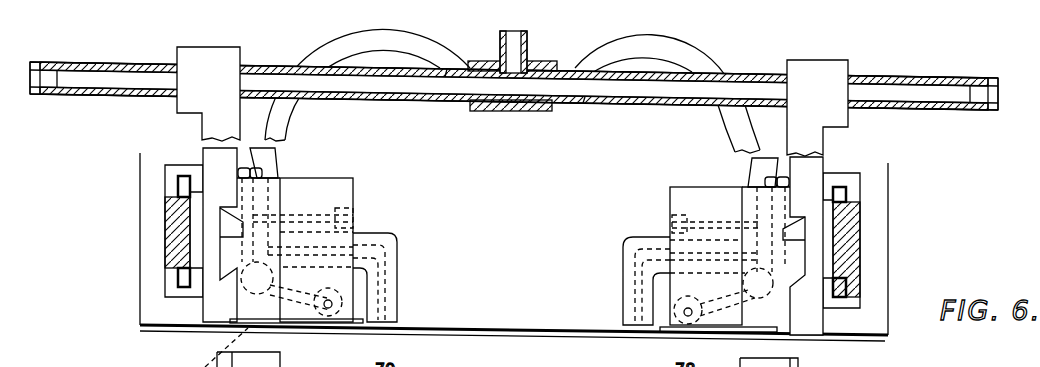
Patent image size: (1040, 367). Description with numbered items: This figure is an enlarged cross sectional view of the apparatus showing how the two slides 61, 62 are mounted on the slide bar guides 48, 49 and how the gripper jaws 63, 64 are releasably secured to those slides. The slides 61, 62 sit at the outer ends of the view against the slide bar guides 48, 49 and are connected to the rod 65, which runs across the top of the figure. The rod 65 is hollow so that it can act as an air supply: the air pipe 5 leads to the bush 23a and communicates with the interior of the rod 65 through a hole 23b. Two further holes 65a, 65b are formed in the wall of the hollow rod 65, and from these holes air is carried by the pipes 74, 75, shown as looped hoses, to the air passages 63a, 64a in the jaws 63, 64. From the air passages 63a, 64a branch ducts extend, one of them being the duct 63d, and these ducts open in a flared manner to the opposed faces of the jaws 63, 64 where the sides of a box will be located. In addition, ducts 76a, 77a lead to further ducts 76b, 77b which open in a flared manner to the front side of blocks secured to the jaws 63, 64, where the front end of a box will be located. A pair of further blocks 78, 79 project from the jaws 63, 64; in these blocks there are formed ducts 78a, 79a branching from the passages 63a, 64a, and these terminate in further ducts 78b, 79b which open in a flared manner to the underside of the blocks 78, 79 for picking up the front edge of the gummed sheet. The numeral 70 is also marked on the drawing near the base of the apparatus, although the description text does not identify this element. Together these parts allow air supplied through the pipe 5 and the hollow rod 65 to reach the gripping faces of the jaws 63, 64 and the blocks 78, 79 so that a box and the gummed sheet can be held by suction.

The air pipe 5 is at (528, 48).
The bush 23a is at (558, 80).
The hole 23b is at (503, 63).
The slide bar guide 48 is at (853, 248).
The slide bar guide 49 is at (165, 234).
The slide 61 is at (823, 174).
The slide 62 is at (203, 161).
The gripper jaw 63 is at (740, 187).
The air passage 63a is at (793, 307).
The branch duct 63d is at (795, 340).
The gripper jaw 64 is at (282, 178).
The air passage 64a is at (235, 292).
The rod 65 is at (757, 78).
The hole 65a is at (583, 82).
The hole 65b is at (450, 72).
The base frame 70 is at (514, 260).
The pipe 74 is at (706, 68).
The pipe 75 is at (379, 42).
The duct 76a is at (714, 310).
The duct 76b is at (625, 292).
The duct 77a is at (312, 302).
The duct 77b is at (398, 290).
The block 78 is at (625, 251).
The duct 78a is at (655, 250).
The duct 78b is at (627, 320).
The block 79 is at (398, 251).
The duct 79a is at (367, 232).
The duct 79b is at (398, 316).